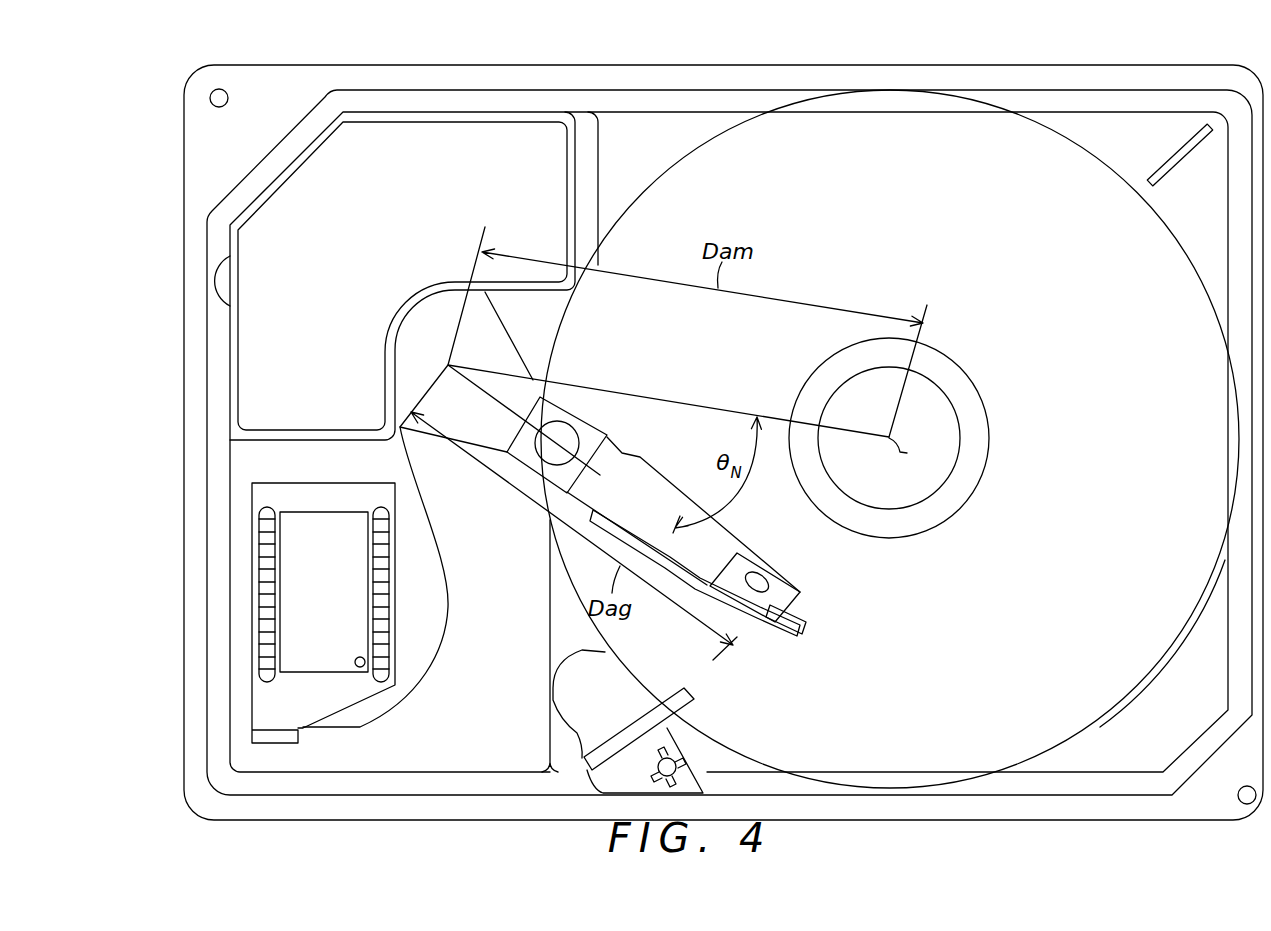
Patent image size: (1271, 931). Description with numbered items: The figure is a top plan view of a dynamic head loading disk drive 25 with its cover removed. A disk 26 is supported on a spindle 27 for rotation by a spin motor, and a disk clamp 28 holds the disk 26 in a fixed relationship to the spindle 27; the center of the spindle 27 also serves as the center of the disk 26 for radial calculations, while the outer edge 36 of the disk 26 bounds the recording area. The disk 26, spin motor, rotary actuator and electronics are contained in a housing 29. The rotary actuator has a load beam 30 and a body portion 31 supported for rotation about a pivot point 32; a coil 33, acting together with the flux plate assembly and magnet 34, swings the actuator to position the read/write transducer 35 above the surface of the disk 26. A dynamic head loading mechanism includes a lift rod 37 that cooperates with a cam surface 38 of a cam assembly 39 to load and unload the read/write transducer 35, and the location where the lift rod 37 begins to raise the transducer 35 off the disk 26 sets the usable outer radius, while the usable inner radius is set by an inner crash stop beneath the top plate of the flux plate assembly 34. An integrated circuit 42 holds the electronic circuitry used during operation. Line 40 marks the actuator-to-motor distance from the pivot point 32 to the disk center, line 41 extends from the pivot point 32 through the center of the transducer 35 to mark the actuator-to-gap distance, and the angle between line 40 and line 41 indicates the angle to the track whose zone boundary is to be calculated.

The dynamic head loading disk drive 25 is at (969, 51).
The disk 26 is at (1181, 215).
The spindle 27 is at (957, 410).
The disk clamp 28 is at (912, 352).
The housing 29 is at (655, 62).
The load beam 30 is at (663, 490).
The body portion 31 is at (512, 332).
The pivot point 32 is at (440, 365).
The coil 33 is at (217, 276).
The flux plate assembly and magnet 34 is at (318, 281).
The read/write transducer 35 is at (775, 575).
The outer edge of disk 36 is at (1133, 690).
The lift rod 37 is at (797, 630).
The cam surface 38 is at (546, 760).
The cam assembly 39 is at (585, 703).
The line indicating distance from pivot point to disk center 40 is at (697, 404).
The line indicating distance from pivot point to transducer gap 41 is at (628, 457).
The integrated circuit 42 is at (308, 593).